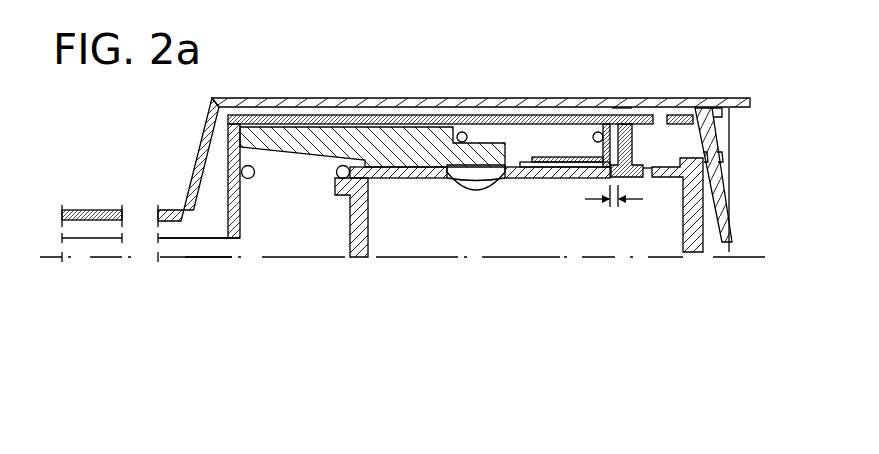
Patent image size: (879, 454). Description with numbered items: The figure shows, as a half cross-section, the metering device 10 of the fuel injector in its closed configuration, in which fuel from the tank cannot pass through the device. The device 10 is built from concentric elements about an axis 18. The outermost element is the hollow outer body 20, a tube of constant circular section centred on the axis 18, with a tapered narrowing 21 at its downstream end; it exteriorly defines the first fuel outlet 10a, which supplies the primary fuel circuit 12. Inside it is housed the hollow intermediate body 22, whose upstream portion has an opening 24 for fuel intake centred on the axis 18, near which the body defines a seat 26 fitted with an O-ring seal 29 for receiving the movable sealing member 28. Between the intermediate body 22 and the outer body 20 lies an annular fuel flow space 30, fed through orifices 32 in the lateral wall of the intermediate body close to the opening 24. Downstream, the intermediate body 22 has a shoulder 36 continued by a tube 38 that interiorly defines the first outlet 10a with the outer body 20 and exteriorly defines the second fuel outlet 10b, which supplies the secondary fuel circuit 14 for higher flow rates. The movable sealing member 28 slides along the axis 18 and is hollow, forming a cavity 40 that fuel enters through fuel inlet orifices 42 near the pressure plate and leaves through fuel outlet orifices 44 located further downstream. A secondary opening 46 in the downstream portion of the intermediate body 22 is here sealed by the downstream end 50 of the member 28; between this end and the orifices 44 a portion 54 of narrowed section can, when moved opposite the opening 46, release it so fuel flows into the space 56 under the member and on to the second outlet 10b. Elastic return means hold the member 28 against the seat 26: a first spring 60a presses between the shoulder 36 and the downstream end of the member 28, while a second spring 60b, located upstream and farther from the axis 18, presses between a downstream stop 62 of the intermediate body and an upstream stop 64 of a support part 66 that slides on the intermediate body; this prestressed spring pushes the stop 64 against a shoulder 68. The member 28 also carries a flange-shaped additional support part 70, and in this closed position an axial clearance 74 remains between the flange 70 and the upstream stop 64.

The metering device 10 is at (727, 85).
The first fuel outlet 10a is at (165, 212).
The second fuel outlet 10b is at (190, 256).
The primary fuel circuit 12 is at (91, 207).
The secondary fuel circuit 14 is at (75, 232).
The axis 18 is at (742, 258).
The hollow outer body 20 is at (425, 98).
The tapered narrowing 21 is at (233, 170).
The hollow intermediate body 22 is at (488, 108).
The opening 24 is at (716, 207).
The seat 26 is at (719, 178).
The movable sealing member 28 is at (693, 254).
The O-ring seal 29 is at (707, 138).
The annular fuel flow space 30 is at (623, 108).
The orifices 32 is at (669, 115).
The shoulder 36 is at (202, 125).
The tube 38 is at (170, 240).
The cavity 40 is at (488, 228).
The fuel inlet orifices 42 is at (704, 115).
The fuel outlet orifices 44 is at (468, 190).
The secondary opening 46 is at (374, 192).
The downstream end 50 is at (332, 116).
The narrowed section portion 54 is at (393, 135).
The space 56 is at (278, 215).
The first spring 60a is at (337, 168).
The second spring 60b is at (604, 127).
The downstream stop 62 is at (463, 131).
The upstream stop 64 is at (596, 133).
The support part 66 is at (550, 157).
The shoulder 68 is at (642, 178).
The additional support part 70 is at (628, 140).
The axial clearance 74 is at (610, 207).